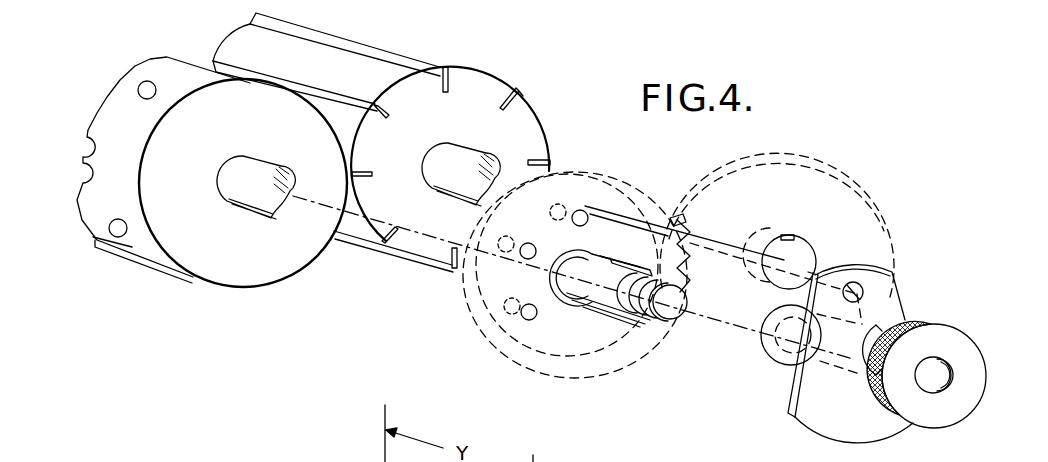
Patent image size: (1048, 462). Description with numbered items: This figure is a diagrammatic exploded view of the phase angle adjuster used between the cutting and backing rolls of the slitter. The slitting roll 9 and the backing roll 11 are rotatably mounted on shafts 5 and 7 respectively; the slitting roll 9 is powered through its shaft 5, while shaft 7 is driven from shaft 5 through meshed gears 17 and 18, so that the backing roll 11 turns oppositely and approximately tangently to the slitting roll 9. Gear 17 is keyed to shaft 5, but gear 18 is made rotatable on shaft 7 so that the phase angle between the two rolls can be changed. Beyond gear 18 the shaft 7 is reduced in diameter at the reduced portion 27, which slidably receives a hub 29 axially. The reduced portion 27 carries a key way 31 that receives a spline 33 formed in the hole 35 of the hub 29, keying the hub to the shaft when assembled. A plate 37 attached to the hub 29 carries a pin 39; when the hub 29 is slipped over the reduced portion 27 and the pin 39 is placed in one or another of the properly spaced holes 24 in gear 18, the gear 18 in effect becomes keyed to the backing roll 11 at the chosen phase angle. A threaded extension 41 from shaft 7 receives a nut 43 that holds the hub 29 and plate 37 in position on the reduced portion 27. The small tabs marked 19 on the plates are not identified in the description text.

The shaft 5 is at (457, 150).
The shaft 7 is at (256, 195).
The slitting roll 9 is at (530, 125).
The backing roll 11 is at (242, 274).
The gear 17 is at (857, 208).
The gear 18 is at (580, 378).
The rivets 19 is at (512, 87).
The holes 24 is at (542, 231).
The reduced portion 27 is at (592, 292).
The hub 29 is at (783, 362).
The key way 31 is at (614, 263).
The spline 33 is at (882, 320).
The hole 35 is at (858, 380).
The plate 37 is at (847, 435).
The pin 39 is at (863, 288).
The threaded extension 41 is at (670, 300).
The nut 43 is at (985, 380).